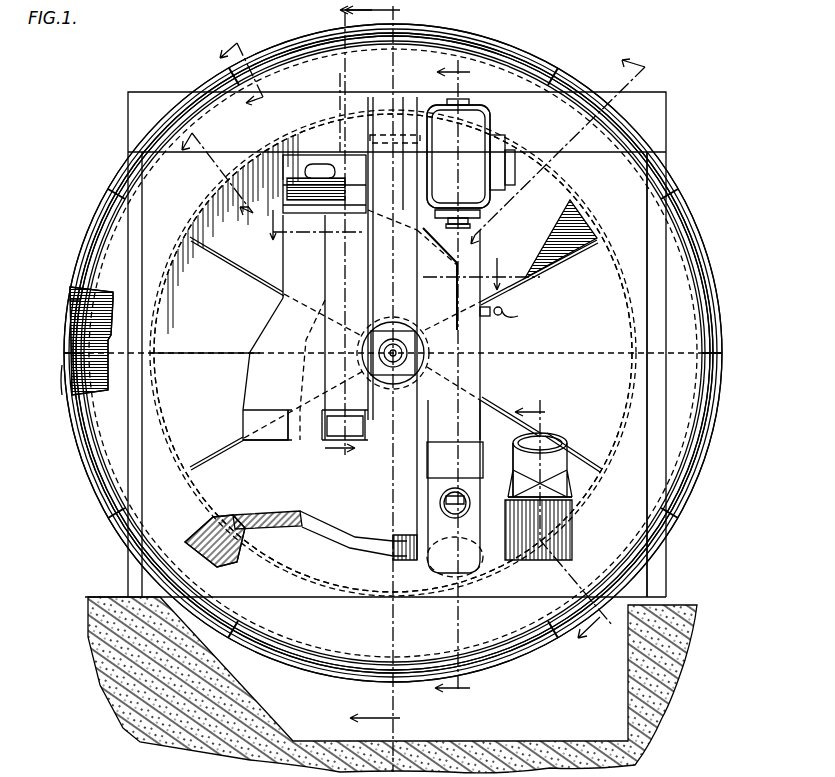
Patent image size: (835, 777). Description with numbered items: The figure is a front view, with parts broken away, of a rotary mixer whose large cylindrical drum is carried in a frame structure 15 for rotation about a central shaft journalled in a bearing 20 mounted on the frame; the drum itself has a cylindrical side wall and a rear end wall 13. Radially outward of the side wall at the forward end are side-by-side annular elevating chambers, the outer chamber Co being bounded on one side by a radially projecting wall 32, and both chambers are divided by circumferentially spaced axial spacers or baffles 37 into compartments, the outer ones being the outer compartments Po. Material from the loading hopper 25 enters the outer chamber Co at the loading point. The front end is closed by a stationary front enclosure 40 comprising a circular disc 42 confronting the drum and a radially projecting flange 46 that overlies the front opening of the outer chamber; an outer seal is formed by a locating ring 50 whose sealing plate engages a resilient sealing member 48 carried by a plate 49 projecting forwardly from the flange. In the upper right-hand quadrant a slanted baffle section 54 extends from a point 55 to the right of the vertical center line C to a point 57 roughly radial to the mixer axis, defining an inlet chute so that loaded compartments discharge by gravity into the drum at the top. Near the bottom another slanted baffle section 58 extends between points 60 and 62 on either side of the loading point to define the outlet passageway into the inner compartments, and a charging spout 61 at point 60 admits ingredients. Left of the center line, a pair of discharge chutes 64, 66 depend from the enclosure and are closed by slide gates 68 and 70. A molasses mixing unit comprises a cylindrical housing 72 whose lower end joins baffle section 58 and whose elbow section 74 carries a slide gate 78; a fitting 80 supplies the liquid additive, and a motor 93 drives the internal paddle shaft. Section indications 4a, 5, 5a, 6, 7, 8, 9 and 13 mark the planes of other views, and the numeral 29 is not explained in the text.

The frame structure 15 is at (143, 90).
The bearing 20 is at (400, 377).
The loading hopper 25 is at (332, 655).
The rim bottom 29 is at (300, 650).
The wall 32 is at (80, 296).
The spacers or baffles 37 is at (378, 635).
The stationary front enclosure 40 is at (614, 400).
The circular disc 42 is at (190, 460).
The flange 46 is at (677, 270).
The annular resilient sealing member 48 is at (705, 330).
The circumferentially extending plate 49 is at (652, 366).
The locating ring 50 is at (712, 298).
The slanted baffle section 54 is at (540, 235).
The point 55 is at (471, 163).
The point 57 is at (593, 248).
The slanted baffle section 58 is at (360, 535).
The point 60 is at (505, 495).
The charging spout 61 is at (562, 462).
The point 62 is at (245, 512).
The discharge chute 64 is at (295, 257).
The discharge chute 66 is at (340, 368).
The slide gate 68 is at (255, 405).
The slide gate 70 is at (345, 400).
The cylindrical housing 72 is at (470, 392).
The elbow section 74 is at (432, 282).
The slide gate 78 is at (368, 140).
The fitting 80 is at (506, 310).
The motor 93 is at (482, 130).
The vertical center line C is at (405, 128).
The outer compartments Po is at (92, 294).
The outer chamber Co is at (60, 397).
The section line 4a is at (393, 364).
The section line 5 is at (341, 237).
The section line 5a is at (263, 63).
The section line 6 is at (459, 382).
The section line 7 is at (570, 516).
The section line 8 is at (568, 166).
The section line 9 is at (397, 248).
The rear end wall 13 is at (235, 166).